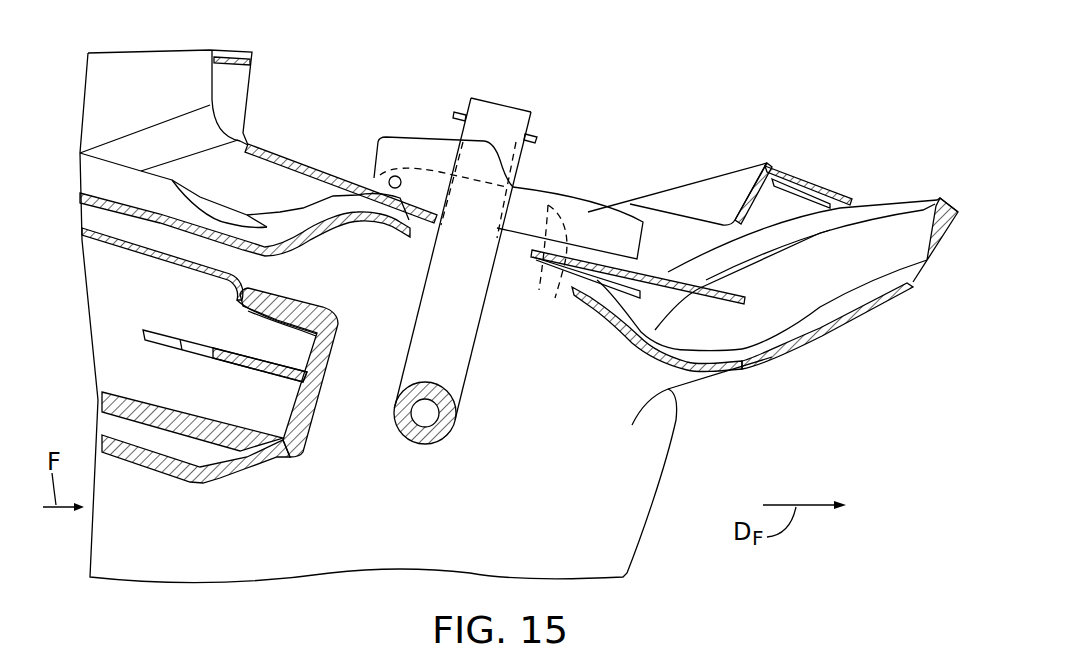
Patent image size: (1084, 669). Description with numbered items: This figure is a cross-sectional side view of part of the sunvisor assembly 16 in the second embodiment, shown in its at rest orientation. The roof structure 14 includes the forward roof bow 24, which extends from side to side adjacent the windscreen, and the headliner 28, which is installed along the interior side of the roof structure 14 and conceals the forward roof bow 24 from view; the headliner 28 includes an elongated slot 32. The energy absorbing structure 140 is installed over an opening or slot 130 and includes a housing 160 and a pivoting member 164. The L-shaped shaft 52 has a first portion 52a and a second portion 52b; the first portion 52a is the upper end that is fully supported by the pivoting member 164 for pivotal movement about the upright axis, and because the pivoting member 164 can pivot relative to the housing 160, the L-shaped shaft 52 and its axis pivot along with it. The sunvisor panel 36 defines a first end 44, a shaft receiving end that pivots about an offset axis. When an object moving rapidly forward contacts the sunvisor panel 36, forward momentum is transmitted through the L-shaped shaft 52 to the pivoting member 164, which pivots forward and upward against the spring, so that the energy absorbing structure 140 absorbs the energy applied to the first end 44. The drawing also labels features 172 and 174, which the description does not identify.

The roof structure 14 is at (160, 67).
The headliner 28 is at (132, 200).
The flange 174 is at (333, 170).
The hole 172 is at (396, 176).
The energy absorbing structure 140 is at (587, 192).
The housing 160 is at (632, 200).
The forward roof bow 24 is at (768, 165).
The pivoting member 164 is at (554, 268).
The opening or slot 130 is at (532, 252).
The elongated slot 32 is at (574, 292).
The L-shaped shaft 52 is at (445, 302).
The first portion 52a is at (440, 338).
The second portion 52b is at (407, 443).
The sunvisor panel 36 is at (184, 418).
The first end 44 is at (314, 408).
The sunvisor assembly 16 is at (133, 472).